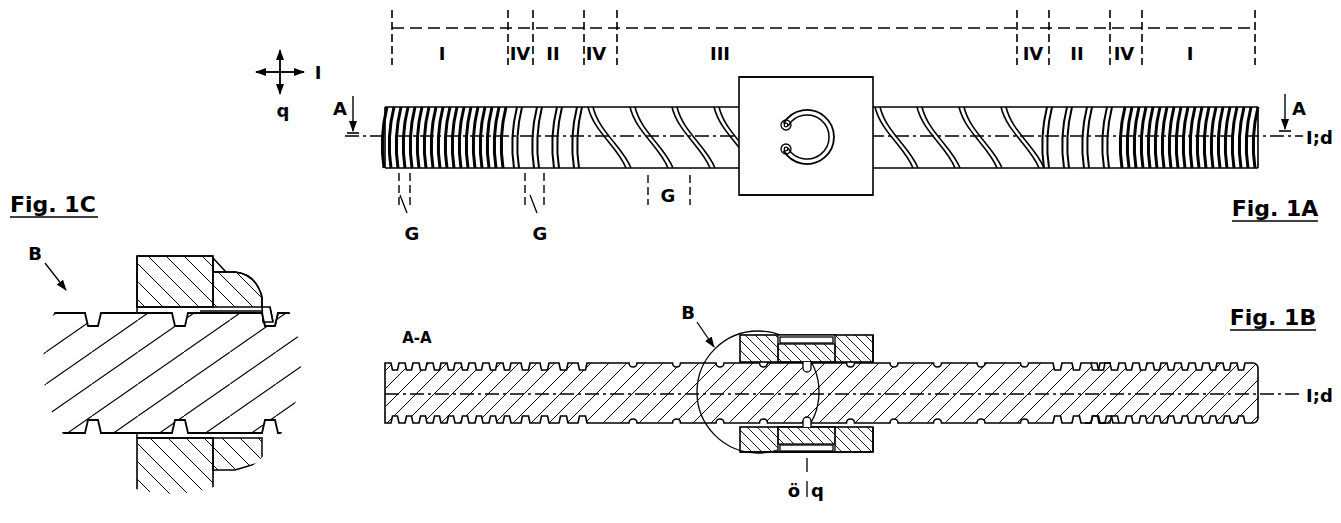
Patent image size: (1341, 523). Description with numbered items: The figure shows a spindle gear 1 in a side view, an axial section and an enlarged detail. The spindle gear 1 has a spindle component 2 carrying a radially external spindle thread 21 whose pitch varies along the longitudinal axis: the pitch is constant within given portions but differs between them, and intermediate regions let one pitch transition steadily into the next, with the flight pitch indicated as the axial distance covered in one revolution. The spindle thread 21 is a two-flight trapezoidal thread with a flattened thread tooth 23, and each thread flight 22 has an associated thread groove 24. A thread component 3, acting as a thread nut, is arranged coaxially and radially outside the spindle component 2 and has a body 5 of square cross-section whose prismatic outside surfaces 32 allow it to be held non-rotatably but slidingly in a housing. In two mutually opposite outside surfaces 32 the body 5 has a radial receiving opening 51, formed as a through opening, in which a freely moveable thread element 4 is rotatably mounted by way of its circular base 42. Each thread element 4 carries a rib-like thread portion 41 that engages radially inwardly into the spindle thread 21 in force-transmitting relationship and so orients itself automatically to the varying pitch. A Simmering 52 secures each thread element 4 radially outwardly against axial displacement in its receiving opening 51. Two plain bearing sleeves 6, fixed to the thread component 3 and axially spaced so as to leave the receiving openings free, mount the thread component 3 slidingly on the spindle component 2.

In FIG. 1A, the spindle gear 1 is at (1278, 89).
In FIG. 1B, the spindle gear 1 is at (1162, 347).
In FIG. 1A, the spindle component 2 is at (1241, 99).
In FIG. 1B, the spindle component 2 is at (1129, 361).
In FIG. 1C, the spindle component 2 is at (290, 419).
In FIG. 1A, the thread component 3 is at (875, 198).
In FIG. 1B, the thread component 3 is at (875, 337).
In FIG. 1A, the thread element 4 is at (804, 153).
In FIG. 1B, the thread element 4 is at (806, 355).
In FIG. 1A, the body 5 is at (848, 197).
In FIG. 1B, the body 5 is at (879, 350).
In FIG. 1C, the body 5 is at (136, 272).
In FIG. 1C, the plain bearing sleeve 6 is at (146, 440).
In FIG. 1A, the spindle thread 21 is at (1201, 105).
In FIG. 1B, the spindle thread 21 is at (1101, 363).
In FIG. 1A, the thread flight 22 is at (478, 170).
In FIG. 1A, the thread tooth 23 is at (1141, 170).
In FIG. 1B, the thread tooth 23 is at (1103, 427).
In FIG. 1A, the thread groove 24 is at (1126, 170).
In FIG. 1B, the thread groove 24 is at (1098, 425).
In FIG. 1C, the thread groove 24 is at (279, 325).
In FIG. 1A, the prismatic outside surface 32 is at (797, 63).
In FIG. 1B, the prismatic outside surface 32 is at (866, 453).
In FIG. 1C, the thread portion 41 is at (272, 305).
In FIG. 1C, the base 42 is at (262, 290).
In FIG. 1A, the receiving opening 51 is at (811, 160).
In FIG. 1B, the receiving opening 51 is at (810, 337).
In FIG. 1A, the Simmering 52 is at (787, 153).
In FIG. 1B, the Simmering 52 is at (830, 336).